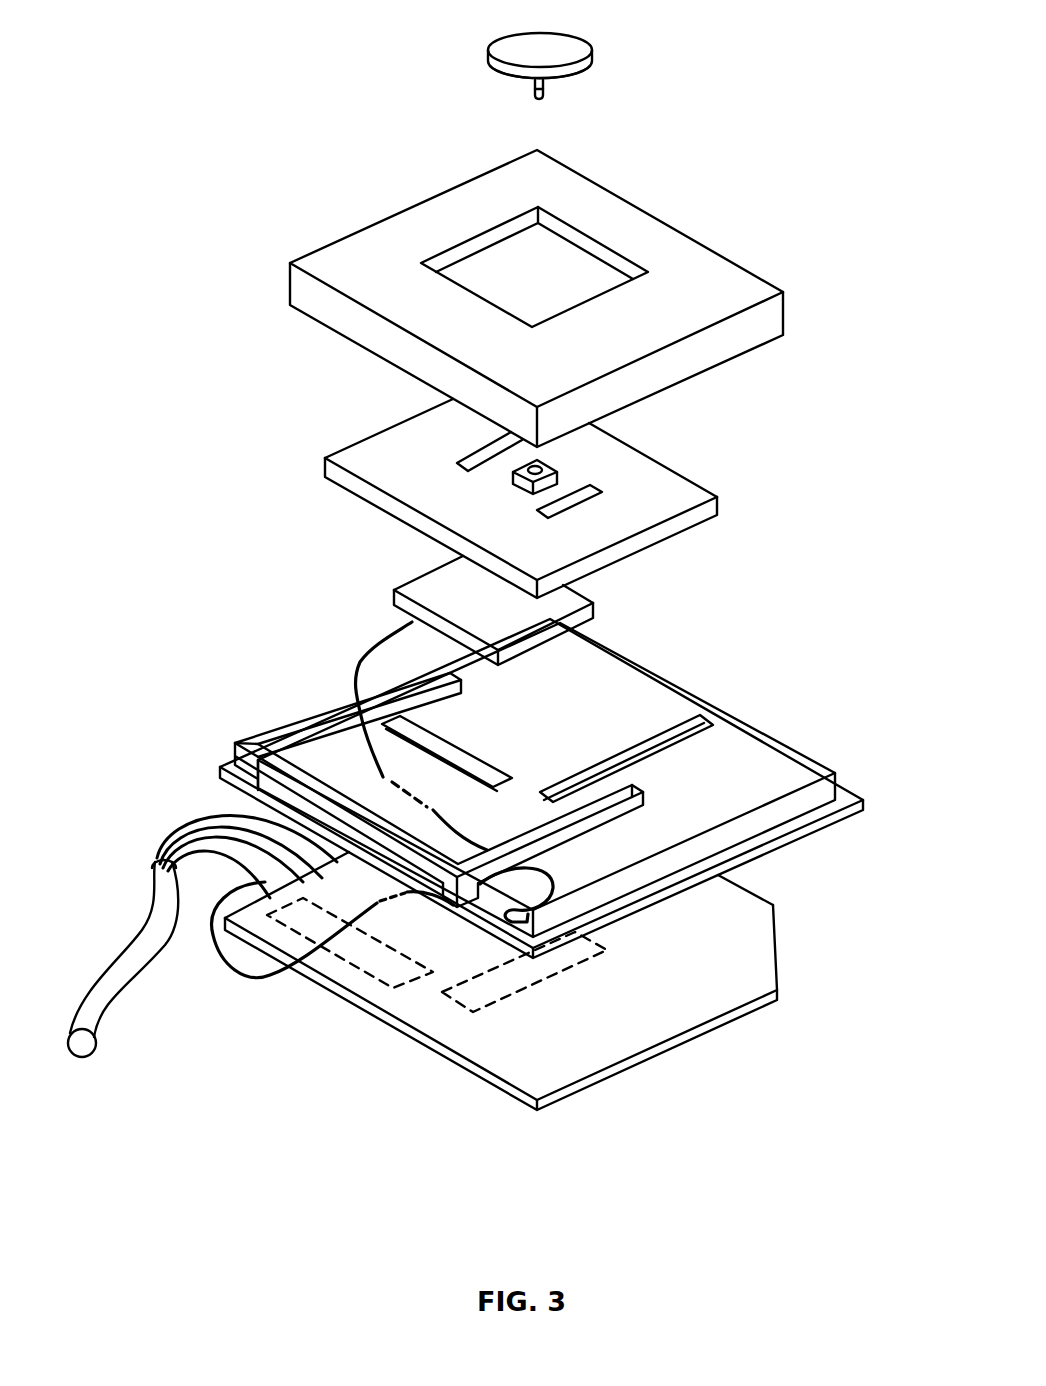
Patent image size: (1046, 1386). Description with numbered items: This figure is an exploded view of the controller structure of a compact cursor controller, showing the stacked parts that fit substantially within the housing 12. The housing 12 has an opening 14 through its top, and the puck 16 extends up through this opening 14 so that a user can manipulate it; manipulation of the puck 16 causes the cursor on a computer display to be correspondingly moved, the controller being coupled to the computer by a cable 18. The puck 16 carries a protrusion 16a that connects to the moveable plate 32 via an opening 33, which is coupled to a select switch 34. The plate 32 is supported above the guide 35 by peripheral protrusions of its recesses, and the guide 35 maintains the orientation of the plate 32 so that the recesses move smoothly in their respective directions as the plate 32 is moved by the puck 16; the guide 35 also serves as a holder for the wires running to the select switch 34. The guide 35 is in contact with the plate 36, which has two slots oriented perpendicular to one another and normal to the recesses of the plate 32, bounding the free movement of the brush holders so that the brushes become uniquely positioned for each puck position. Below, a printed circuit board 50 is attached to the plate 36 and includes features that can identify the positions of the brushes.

The housing 12 is at (538, 298).
The opening 14 is at (582, 250).
The puck 16 is at (567, 33).
The protrusion 16a is at (545, 101).
The cable 18 is at (122, 952).
The plate 32 is at (324, 468).
The opening 33 is at (558, 475).
The select switch 34 is at (393, 600).
The guide 35 is at (310, 746).
The plate 36 is at (230, 788).
The printed circuit board 50 is at (425, 1042).